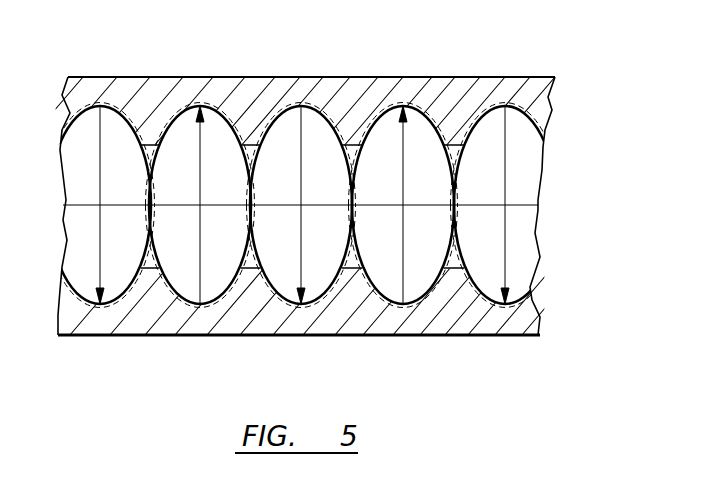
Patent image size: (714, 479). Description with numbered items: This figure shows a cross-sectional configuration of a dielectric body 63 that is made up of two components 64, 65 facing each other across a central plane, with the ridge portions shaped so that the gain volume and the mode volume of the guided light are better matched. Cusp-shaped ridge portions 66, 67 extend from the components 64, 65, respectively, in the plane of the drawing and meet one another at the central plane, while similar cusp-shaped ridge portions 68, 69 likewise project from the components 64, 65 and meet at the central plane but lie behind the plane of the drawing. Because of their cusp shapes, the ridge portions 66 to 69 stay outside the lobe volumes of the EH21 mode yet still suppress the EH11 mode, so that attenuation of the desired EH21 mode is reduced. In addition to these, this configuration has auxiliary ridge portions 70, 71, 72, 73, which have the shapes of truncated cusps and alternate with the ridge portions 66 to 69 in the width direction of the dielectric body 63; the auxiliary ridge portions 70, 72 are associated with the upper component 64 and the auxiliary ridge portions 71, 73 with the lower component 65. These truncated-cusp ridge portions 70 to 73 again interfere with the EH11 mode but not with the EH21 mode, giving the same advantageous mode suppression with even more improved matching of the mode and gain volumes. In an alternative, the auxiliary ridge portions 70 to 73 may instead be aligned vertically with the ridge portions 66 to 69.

The dielectric body 63 is at (582, 82).
The component 64 is at (106, 77).
The component 65 is at (68, 336).
The cusp-shaped ridge portion 66 is at (147, 160).
The cusp-shaped ridge portion 67 is at (147, 257).
The cusp-shaped ridge portion 68 is at (250, 157).
The cusp-shaped ridge portion 69 is at (250, 258).
The auxiliary ridge portion 70 is at (250, 133).
The auxiliary ridge portion 71 is at (245, 287).
The auxiliary ridge portion 72 is at (146, 100).
The auxiliary ridge portion 73 is at (150, 283).